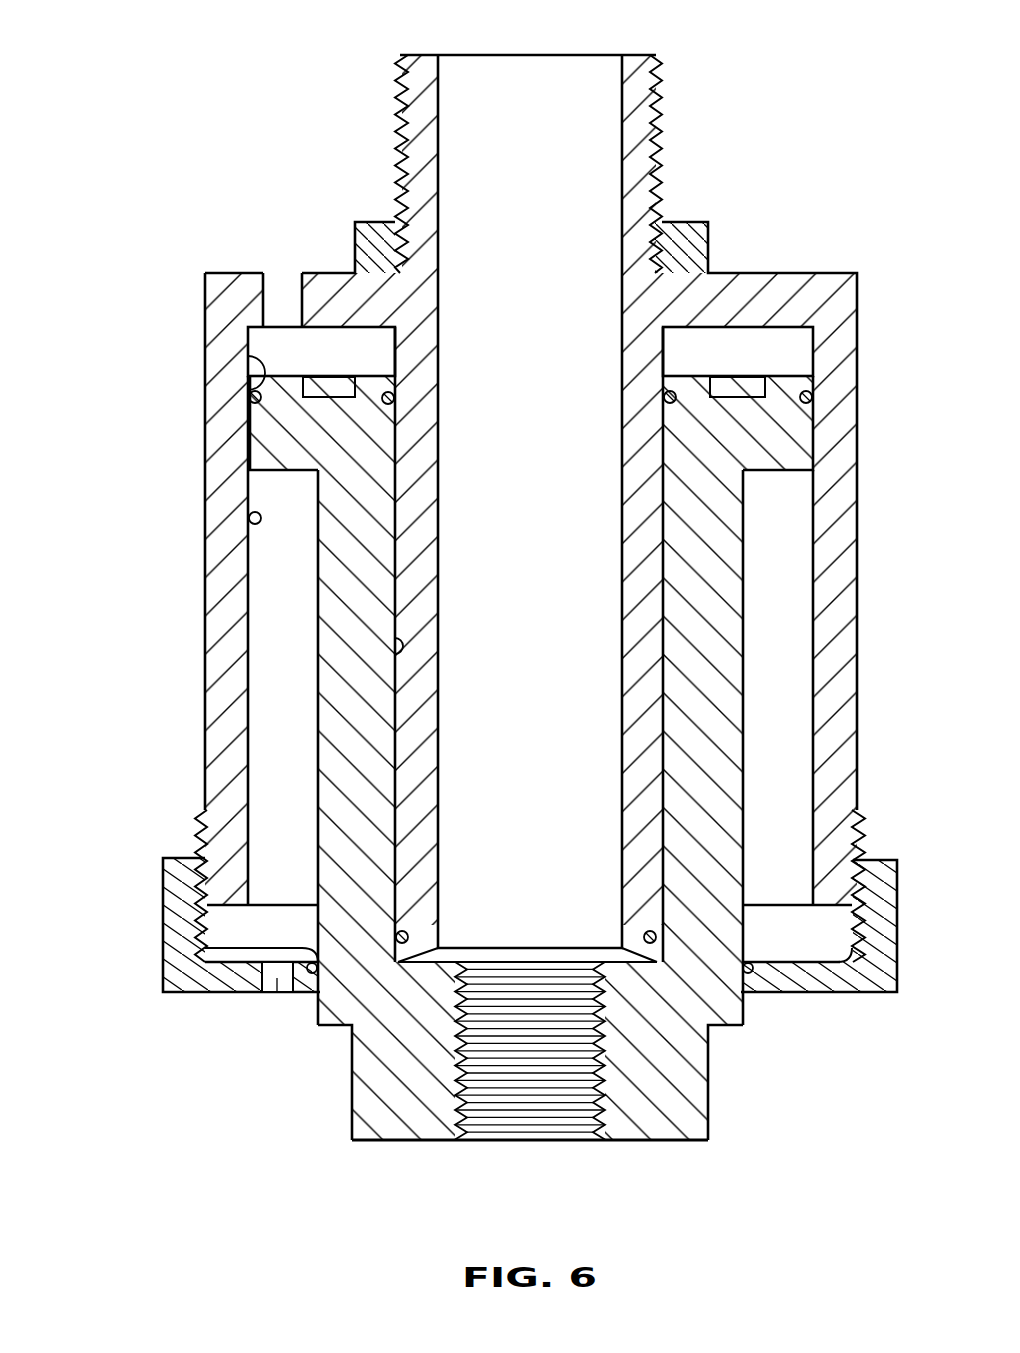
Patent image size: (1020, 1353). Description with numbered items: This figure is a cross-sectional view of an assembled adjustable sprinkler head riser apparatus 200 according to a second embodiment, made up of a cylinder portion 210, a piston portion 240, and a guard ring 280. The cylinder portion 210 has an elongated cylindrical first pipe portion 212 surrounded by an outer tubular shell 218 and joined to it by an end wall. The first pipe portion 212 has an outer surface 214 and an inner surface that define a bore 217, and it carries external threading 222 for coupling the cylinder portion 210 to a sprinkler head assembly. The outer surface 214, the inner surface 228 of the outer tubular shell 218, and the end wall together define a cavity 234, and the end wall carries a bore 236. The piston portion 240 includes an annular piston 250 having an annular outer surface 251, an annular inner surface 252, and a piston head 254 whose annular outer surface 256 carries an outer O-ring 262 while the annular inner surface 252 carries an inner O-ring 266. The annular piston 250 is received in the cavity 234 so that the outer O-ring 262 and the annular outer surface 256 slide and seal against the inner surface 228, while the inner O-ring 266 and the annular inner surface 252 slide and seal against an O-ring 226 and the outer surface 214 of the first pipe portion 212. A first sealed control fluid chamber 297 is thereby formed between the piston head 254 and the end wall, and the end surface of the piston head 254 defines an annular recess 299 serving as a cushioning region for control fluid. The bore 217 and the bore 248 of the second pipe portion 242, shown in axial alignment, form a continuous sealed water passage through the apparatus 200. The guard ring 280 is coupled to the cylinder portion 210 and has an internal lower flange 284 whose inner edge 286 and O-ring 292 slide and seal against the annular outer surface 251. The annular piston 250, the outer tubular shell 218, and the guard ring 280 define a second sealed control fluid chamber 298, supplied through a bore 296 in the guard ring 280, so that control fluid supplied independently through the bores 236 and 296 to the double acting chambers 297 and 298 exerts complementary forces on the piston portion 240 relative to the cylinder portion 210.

The sprinkler head riser apparatus 200 is at (737, 42).
The cylinder portion 210 is at (792, 284).
The first pipe portion 212 is at (408, 820).
The outer surface 214 is at (395, 778).
The bore 217 is at (598, 258).
The outer tubular shell 218 is at (215, 552).
The external threading 222 is at (662, 103).
The O-ring 226 is at (405, 952).
The inner surface 228 is at (249, 517).
The cavity 234 is at (776, 366).
The bore 236 is at (285, 292).
The piston portion 240 is at (760, 432).
The second pipe portion 242 is at (652, 1115).
The bore 248 is at (512, 1100).
The annular piston 250 is at (350, 706).
The annular outer surface 251 is at (330, 678).
The annular inner surface 252 is at (400, 645).
The piston head 254 is at (278, 432).
The annular outer surface 256 is at (250, 453).
The outer O-ring 262 is at (247, 358).
The inner O-ring 266 is at (385, 406).
The guard ring 280 is at (898, 893).
The internal lower flange 284 is at (228, 972).
The inner edge 286 is at (337, 992).
The O-ring 292 is at (307, 948).
The bore 296 is at (277, 982).
The first sealed control fluid chamber 297 is at (377, 366).
The second sealed control fluid chamber 298 is at (312, 596).
The annular recess 299 is at (313, 378).